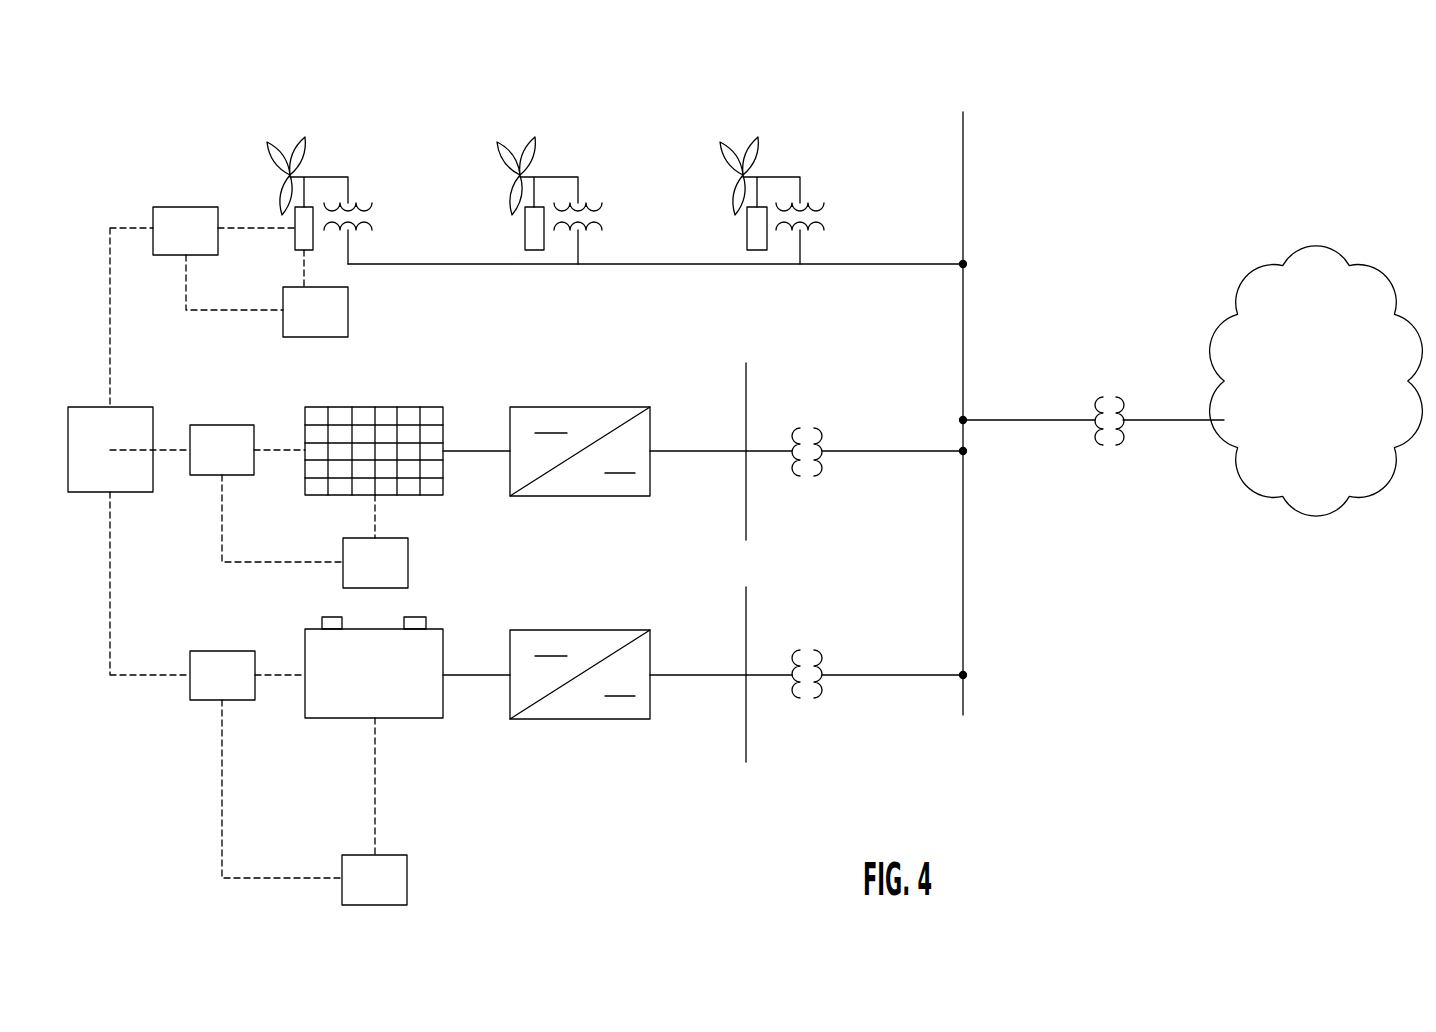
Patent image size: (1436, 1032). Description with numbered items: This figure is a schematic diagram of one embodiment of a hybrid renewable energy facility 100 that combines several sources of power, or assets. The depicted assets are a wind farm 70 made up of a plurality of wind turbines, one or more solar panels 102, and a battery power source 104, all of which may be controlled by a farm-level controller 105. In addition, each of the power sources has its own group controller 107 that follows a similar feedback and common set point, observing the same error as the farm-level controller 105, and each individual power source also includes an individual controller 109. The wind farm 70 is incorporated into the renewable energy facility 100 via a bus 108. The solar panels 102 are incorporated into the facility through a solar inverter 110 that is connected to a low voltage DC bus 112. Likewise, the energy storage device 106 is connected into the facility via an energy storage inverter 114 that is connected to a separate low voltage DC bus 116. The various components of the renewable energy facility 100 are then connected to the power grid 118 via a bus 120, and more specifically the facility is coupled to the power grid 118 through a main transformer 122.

The hybrid renewable energy facility 100 is at (217, 130).
The wind farm 70 is at (625, 130).
The solar panel 102 is at (385, 407).
The battery power source 104 is at (422, 603).
The farm-level controller 105 is at (131, 467).
The energy storage device 106 is at (340, 718).
The group controller 107 is at (206, 248).
The bus 108 is at (497, 264).
The individual controller 109 is at (336, 329).
The solar inverter 110 is at (577, 407).
The low voltage DC bus 112 is at (748, 392).
The energy storage inverter 114 is at (577, 630).
The separate low voltage DC bus 116 is at (748, 622).
The power grid 118 is at (1332, 441).
The bus 120 is at (965, 160).
The main transformer 122 is at (1108, 450).